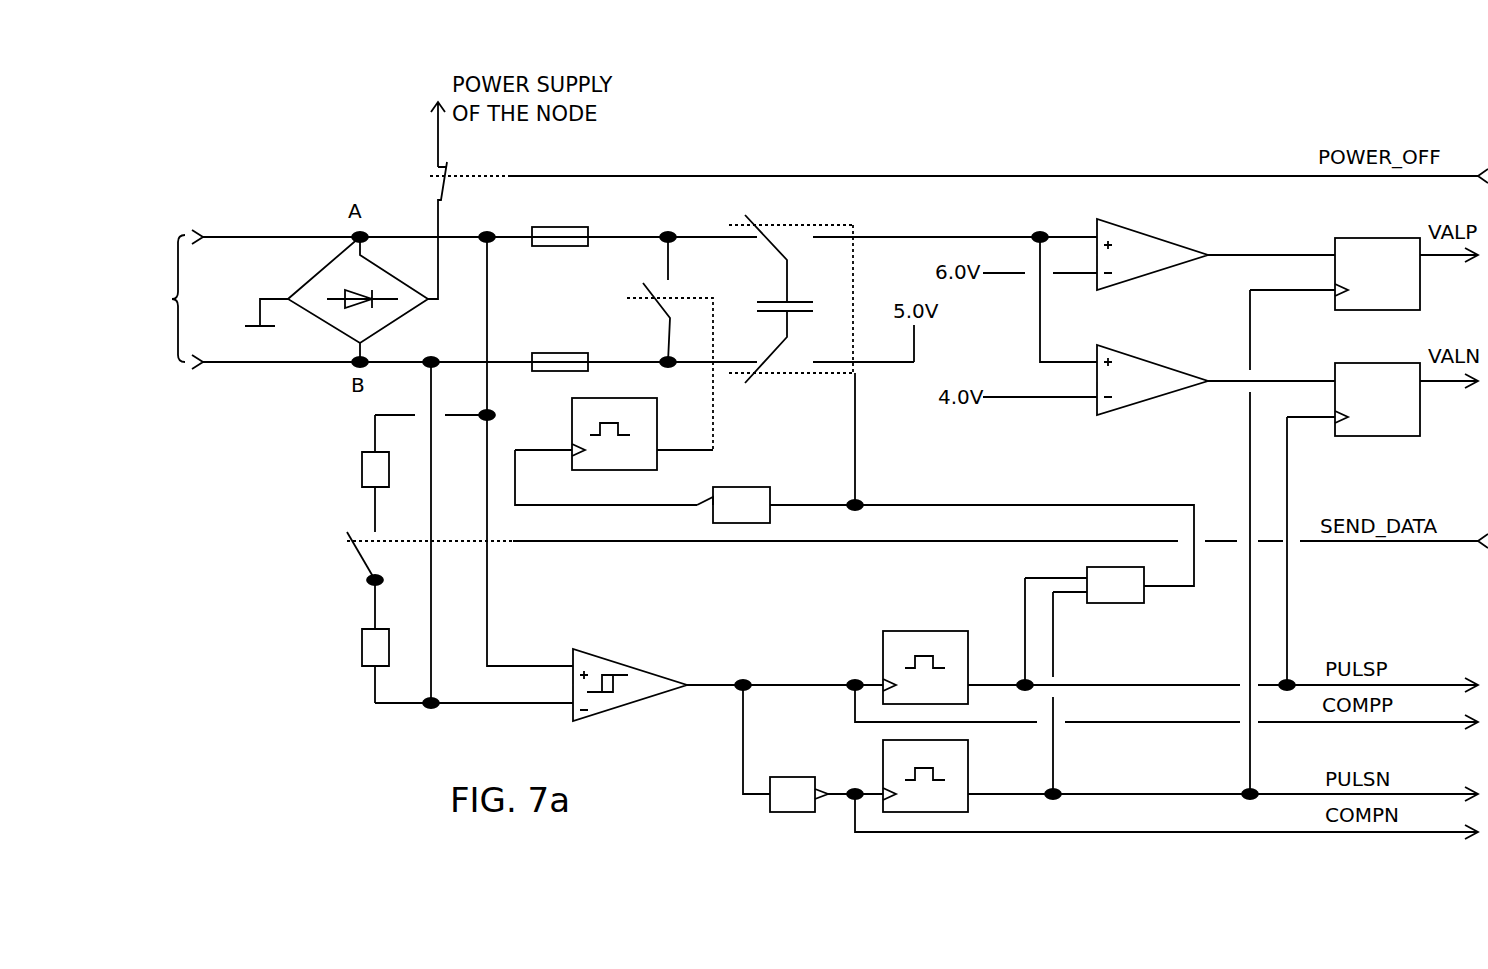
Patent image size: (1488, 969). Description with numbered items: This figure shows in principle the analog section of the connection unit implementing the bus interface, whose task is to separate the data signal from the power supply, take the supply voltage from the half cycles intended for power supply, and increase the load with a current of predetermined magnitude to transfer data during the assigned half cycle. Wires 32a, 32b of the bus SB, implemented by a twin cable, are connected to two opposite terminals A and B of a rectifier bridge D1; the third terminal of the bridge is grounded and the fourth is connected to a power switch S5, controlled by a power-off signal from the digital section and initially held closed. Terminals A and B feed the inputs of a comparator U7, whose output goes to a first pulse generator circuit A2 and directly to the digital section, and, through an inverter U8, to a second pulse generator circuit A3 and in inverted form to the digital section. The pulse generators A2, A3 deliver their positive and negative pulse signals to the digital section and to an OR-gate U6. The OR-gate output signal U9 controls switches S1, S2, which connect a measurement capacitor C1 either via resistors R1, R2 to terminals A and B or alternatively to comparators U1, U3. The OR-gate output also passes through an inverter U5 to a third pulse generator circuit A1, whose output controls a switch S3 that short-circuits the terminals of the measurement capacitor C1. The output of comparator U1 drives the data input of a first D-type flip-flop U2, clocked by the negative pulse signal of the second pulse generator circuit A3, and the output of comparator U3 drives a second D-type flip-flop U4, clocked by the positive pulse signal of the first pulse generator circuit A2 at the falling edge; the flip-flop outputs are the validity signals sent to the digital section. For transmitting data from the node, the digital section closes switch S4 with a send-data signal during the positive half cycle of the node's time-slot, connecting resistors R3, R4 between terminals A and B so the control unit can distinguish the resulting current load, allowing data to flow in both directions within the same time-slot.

The wire 32a is at (263, 236).
The wire 32b is at (265, 363).
The bus SB is at (160, 298).
The rectifier bridge D1 is at (407, 280).
The switch S1 is at (791, 249).
The switch S2 is at (791, 358).
The switch S3 is at (664, 343).
The switch S4 is at (350, 558).
The power switch S5 is at (447, 165).
The resistor R1 is at (560, 224).
The resistor R2 is at (560, 349).
The resistor R3 is at (354, 473).
The resistor R4 is at (356, 641).
The measurement capacitor C1 is at (774, 290).
The third pulse generator circuit A1 is at (604, 408).
The first pulse generator circuit A2 is at (907, 632).
The second pulse generator circuit A3 is at (960, 746).
The comparator U1 is at (1148, 245).
The first D-type flip-flop U2 is at (1357, 243).
The comparator U3 is at (1148, 371).
The second D-type flip-flop U4 is at (1357, 369).
The inverter U5 is at (738, 490).
The OR-gate U6 is at (1110, 604).
The comparator U7 is at (620, 662).
The inverter U8 is at (786, 780).
The output signal of the OR-gate U9 is at (1103, 581).